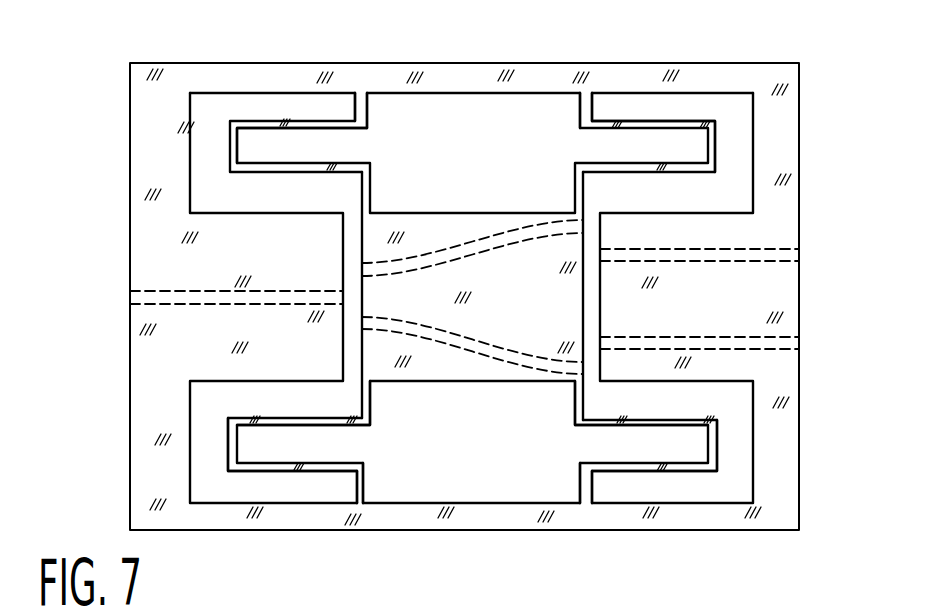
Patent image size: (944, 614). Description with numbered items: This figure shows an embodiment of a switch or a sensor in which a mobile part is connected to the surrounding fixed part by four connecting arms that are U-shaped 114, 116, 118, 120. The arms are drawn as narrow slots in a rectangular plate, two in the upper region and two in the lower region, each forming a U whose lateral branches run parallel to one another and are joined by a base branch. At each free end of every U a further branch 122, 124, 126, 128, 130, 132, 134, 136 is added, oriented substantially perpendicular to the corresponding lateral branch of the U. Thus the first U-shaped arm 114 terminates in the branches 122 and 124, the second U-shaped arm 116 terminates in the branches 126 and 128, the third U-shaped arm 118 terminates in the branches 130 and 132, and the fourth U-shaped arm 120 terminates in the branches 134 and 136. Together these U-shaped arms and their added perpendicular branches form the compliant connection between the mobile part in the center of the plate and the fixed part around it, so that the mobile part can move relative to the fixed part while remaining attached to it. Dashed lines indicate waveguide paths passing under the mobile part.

The U-shaped connecting arm 114 is at (252, 128).
The U-shaped connecting arm 116 is at (688, 122).
The U-shaped connecting arm 118 is at (253, 471).
The U-shaped connecting arm 120 is at (683, 471).
The branch 122 is at (362, 110).
The branch 124 is at (362, 192).
The branch 126 is at (587, 104).
The branch 128 is at (580, 192).
The branch 130 is at (367, 398).
The branch 132 is at (361, 485).
The branch 134 is at (578, 402).
The branch 136 is at (585, 485).